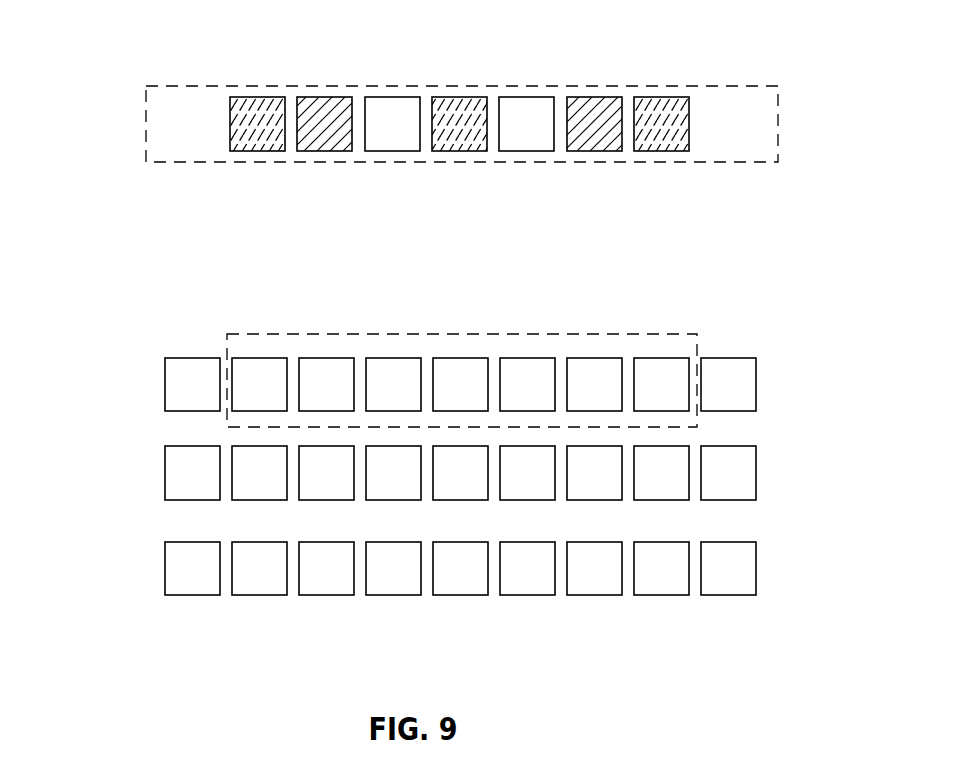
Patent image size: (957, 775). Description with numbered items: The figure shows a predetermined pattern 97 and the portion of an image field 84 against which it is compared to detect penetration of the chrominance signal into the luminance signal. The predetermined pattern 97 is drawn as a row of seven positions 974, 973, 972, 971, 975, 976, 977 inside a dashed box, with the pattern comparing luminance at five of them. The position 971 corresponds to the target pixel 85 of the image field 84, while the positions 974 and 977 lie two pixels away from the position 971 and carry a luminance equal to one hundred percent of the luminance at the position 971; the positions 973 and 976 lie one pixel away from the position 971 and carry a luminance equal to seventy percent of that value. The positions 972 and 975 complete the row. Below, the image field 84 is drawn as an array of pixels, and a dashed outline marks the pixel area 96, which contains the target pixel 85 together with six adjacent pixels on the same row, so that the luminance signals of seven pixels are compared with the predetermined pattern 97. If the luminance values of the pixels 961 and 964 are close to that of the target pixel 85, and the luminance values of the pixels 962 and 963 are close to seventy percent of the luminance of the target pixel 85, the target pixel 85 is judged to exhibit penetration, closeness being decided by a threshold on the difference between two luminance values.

The predetermined pattern 97 is at (146, 160).
The position 971 is at (458, 151).
The position 972 is at (392, 151).
The position 973 is at (309, 151).
The position 974 is at (243, 151).
The position 975 is at (530, 151).
The position 976 is at (593, 151).
The position 977 is at (658, 151).
The image field 84 is at (146, 517).
The target pixel 85 is at (462, 357).
The pixel area 96 is at (395, 334).
The pixel 961 is at (240, 357).
The pixel 962 is at (315, 357).
The pixel 963 is at (577, 357).
The pixel 964 is at (655, 357).